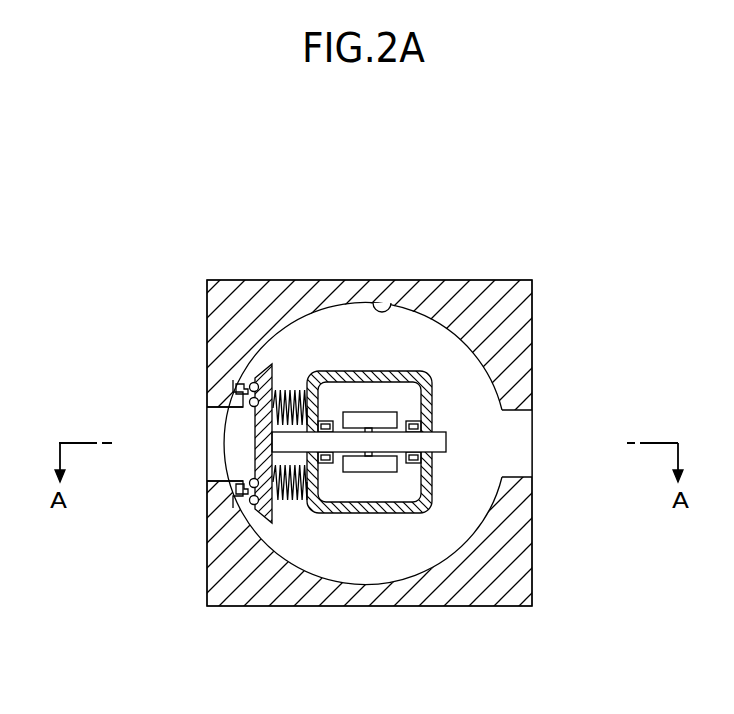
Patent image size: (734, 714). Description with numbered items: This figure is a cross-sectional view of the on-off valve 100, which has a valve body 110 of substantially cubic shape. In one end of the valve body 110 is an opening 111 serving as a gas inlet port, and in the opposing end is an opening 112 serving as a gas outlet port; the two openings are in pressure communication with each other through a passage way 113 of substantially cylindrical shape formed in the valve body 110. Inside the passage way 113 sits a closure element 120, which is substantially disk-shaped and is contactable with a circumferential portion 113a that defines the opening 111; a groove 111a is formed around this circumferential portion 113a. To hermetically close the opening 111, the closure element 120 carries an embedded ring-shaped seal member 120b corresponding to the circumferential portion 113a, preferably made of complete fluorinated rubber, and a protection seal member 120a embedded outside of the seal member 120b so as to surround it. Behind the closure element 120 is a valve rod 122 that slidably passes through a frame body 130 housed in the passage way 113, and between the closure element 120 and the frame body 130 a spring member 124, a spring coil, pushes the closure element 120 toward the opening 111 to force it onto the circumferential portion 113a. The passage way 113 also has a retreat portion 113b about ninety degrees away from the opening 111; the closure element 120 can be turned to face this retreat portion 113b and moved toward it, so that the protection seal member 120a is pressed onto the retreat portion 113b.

The on-off valve 100 is at (468, 218).
The valve body 110 is at (515, 333).
The opening 111 is at (253, 469).
The groove 111a is at (240, 388).
The opening 112 is at (520, 452).
The passage way 113 is at (392, 557).
The circumferential portion 113a is at (222, 478).
The retreat portion 113b is at (387, 306).
The closure element 120 is at (273, 374).
The protection seal member 120a is at (252, 382).
The seal member 120b is at (252, 478).
The valve rod 122 is at (447, 443).
The spring member 124 is at (291, 500).
The frame body 130 is at (425, 405).